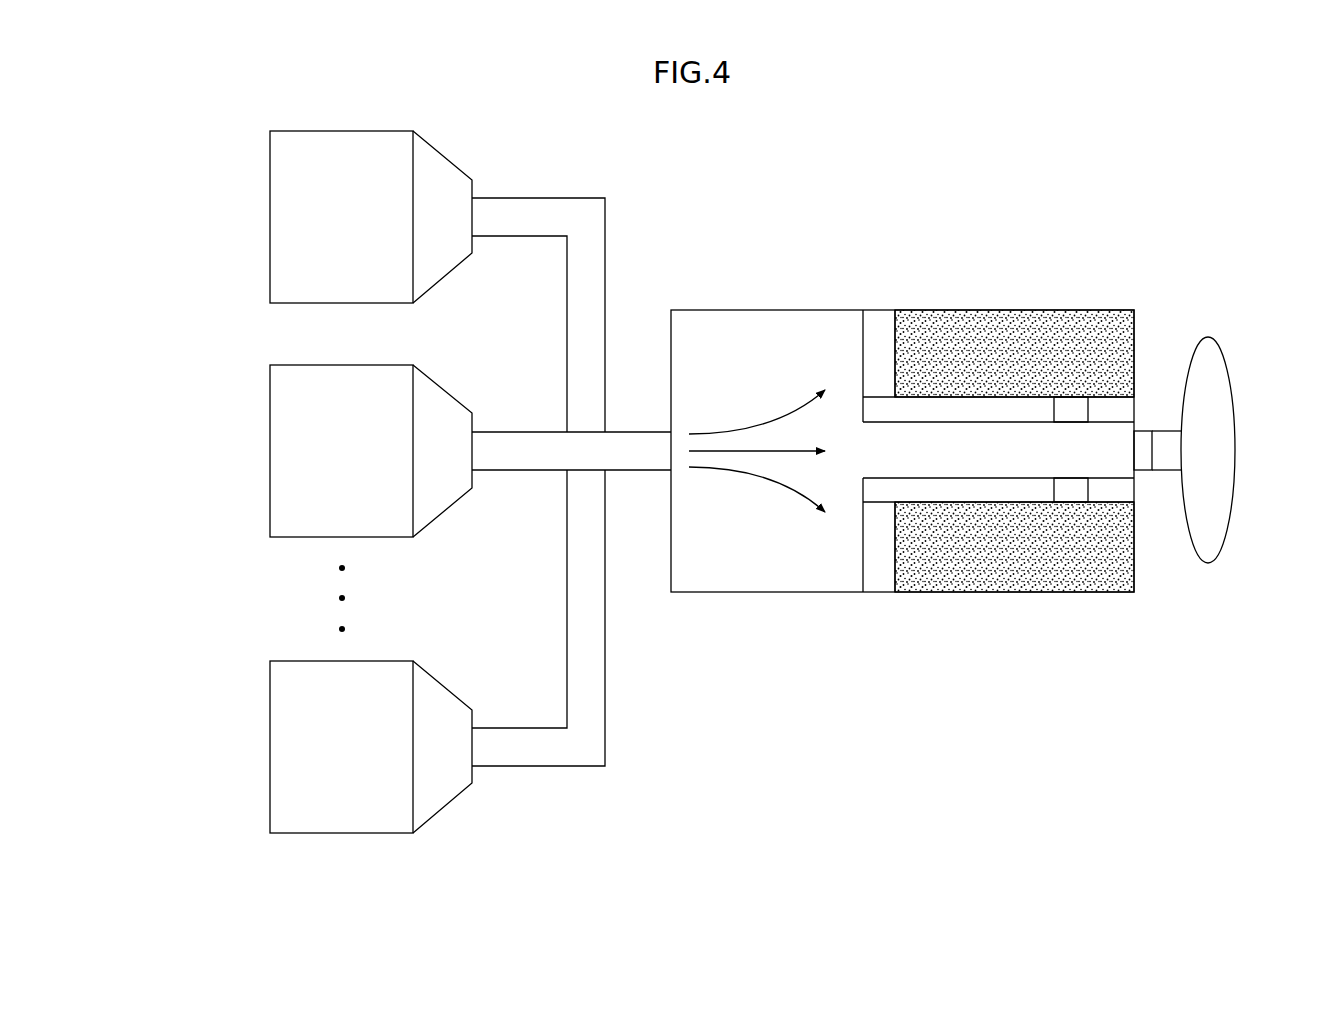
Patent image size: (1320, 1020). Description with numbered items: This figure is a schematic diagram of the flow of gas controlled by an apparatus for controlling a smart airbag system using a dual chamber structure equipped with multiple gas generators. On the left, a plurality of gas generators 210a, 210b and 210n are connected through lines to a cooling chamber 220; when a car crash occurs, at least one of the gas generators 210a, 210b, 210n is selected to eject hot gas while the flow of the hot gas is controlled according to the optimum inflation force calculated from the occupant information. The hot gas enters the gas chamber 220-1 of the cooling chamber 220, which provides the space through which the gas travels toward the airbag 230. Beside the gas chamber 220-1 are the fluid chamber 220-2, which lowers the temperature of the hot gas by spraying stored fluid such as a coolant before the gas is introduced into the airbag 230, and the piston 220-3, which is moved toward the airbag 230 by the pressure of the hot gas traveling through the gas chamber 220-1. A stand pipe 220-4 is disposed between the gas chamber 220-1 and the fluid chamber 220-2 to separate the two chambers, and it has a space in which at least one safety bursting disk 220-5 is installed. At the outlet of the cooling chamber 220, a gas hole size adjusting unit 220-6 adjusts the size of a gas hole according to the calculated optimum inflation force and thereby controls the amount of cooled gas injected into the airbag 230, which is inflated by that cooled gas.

The gas generator 210a is at (270, 215).
The gas generator 210b is at (270, 447).
The gas generator 210n is at (270, 745).
The cooling chamber 220 is at (717, 307).
The gas chamber 220-1 is at (769, 547).
The fluid chamber 220-2 is at (948, 348).
The piston 220-3 is at (862, 352).
The stand pipe 220-4 is at (993, 412).
The safety bursting disk 220-5 is at (1070, 408).
The gas hole size adjusting unit 220-6 is at (1143, 433).
The airbag 230 is at (1218, 400).